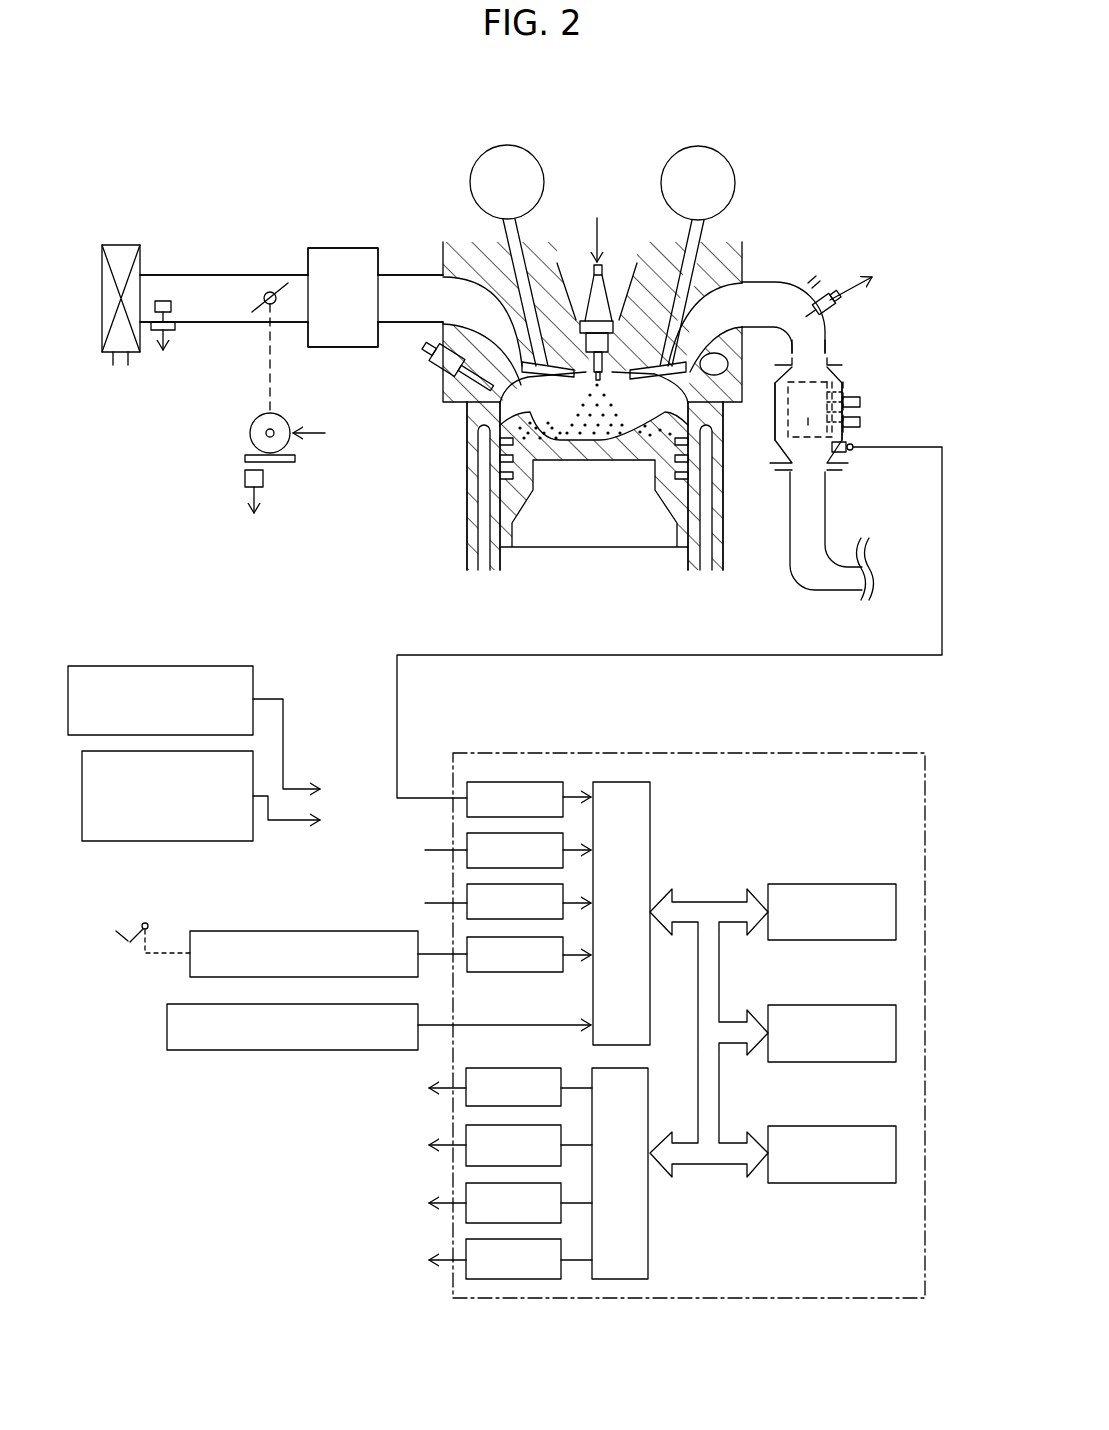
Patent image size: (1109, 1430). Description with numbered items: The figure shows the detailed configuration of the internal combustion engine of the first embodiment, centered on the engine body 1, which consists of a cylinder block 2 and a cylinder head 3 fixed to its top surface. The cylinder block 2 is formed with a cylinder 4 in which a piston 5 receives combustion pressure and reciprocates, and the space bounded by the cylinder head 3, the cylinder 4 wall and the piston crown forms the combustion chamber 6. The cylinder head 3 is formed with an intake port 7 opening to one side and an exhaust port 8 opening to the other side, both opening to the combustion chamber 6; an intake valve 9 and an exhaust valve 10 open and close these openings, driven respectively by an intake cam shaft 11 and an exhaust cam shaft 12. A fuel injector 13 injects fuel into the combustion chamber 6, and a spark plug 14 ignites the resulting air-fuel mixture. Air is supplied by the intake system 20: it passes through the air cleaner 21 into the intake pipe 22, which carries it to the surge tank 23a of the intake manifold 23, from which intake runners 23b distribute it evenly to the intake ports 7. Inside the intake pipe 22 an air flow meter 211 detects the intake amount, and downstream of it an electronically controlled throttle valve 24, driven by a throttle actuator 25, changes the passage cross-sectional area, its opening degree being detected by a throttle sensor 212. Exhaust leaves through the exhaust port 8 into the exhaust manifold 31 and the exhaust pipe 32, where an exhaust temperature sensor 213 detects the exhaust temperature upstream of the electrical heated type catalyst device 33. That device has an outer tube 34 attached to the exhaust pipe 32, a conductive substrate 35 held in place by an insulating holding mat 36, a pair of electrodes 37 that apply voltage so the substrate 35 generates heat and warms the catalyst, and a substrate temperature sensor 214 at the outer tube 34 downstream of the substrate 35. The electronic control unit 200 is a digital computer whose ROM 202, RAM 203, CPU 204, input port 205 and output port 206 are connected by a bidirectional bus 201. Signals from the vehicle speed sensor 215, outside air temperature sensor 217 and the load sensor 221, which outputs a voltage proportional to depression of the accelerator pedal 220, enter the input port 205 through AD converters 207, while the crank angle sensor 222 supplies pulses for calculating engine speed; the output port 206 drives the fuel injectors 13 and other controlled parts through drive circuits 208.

The engine body 1 is at (460, 506).
The cylinder block 2 is at (717, 490).
The cylinder head 3 is at (445, 404).
The cylinder 4 is at (498, 432).
The piston 5 is at (522, 490).
The combustion chamber 6 is at (650, 392).
The intake port 7 is at (478, 290).
The exhaust port 8 is at (763, 300).
The intake valve 9 is at (533, 273).
The exhaust valve 10 is at (673, 240).
The intake cam shaft 11 is at (513, 147).
The exhaust cam shaft 12 is at (718, 152).
The fuel injector 13 is at (422, 378).
The spark plug 14 is at (602, 310).
The intake system 20 is at (258, 226).
The air cleaner 21 is at (122, 245).
The intake pipe 22 is at (205, 324).
The intake manifold 23 is at (307, 170).
The surge tank 23a is at (340, 248).
The intake runner 23b is at (400, 275).
The throttle valve 24 is at (286, 292).
The throttle actuator 25 is at (250, 437).
The exhaust manifold 31 is at (795, 283).
The exhaust pipe 32 is at (828, 347).
The electrical heated type catalyst device 33 is at (853, 380).
The outer tube 34 is at (773, 413).
The conductive substrate 35 is at (808, 428).
The holding mat 36 is at (858, 390).
The electrode 37 is at (860, 402).
The electronic control unit 200 is at (928, 848).
The bidirectional bus 201 is at (710, 902).
The ROM 202 is at (856, 884).
The RAM 203 is at (856, 1005).
The CPU 204 is at (838, 1126).
The input port 205 is at (653, 789).
The output port 206 is at (652, 1260).
The AD converter 207 is at (467, 812).
The drive circuit 208 is at (466, 1245).
The air flow meter 211 is at (163, 300).
The throttle sensor 212 is at (265, 478).
The exhaust temperature sensor 213 is at (842, 304).
The substrate temperature sensor 214 is at (850, 452).
The vehicle speed sensor 215 is at (187, 666).
The outside air temperature sensor 217 is at (165, 841).
The accelerator pedal 220 is at (125, 947).
The load sensor 221 is at (320, 931).
The crank angle sensor 222 is at (250, 1050).